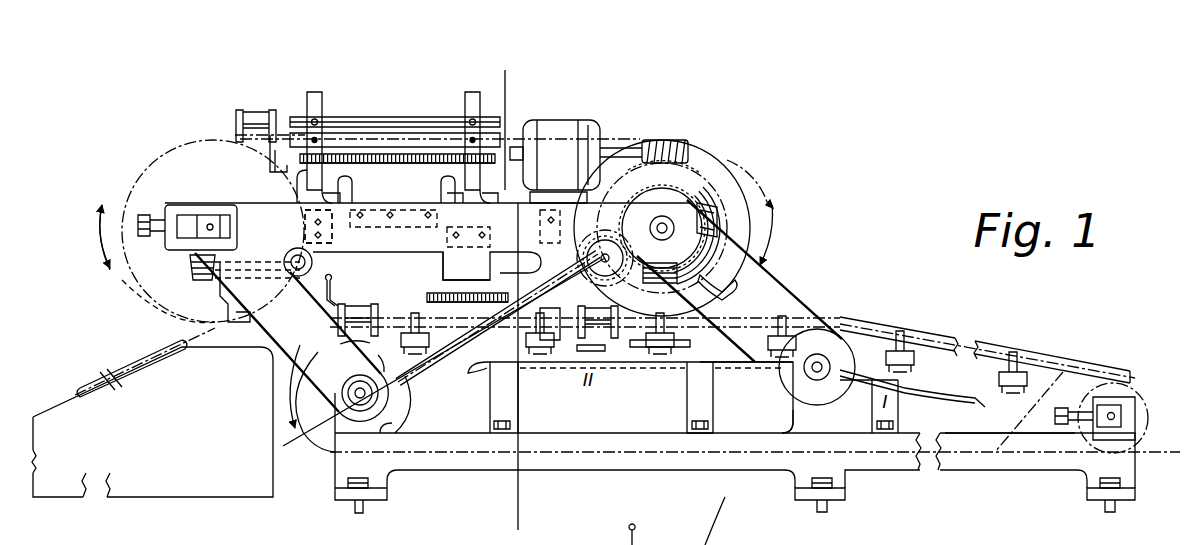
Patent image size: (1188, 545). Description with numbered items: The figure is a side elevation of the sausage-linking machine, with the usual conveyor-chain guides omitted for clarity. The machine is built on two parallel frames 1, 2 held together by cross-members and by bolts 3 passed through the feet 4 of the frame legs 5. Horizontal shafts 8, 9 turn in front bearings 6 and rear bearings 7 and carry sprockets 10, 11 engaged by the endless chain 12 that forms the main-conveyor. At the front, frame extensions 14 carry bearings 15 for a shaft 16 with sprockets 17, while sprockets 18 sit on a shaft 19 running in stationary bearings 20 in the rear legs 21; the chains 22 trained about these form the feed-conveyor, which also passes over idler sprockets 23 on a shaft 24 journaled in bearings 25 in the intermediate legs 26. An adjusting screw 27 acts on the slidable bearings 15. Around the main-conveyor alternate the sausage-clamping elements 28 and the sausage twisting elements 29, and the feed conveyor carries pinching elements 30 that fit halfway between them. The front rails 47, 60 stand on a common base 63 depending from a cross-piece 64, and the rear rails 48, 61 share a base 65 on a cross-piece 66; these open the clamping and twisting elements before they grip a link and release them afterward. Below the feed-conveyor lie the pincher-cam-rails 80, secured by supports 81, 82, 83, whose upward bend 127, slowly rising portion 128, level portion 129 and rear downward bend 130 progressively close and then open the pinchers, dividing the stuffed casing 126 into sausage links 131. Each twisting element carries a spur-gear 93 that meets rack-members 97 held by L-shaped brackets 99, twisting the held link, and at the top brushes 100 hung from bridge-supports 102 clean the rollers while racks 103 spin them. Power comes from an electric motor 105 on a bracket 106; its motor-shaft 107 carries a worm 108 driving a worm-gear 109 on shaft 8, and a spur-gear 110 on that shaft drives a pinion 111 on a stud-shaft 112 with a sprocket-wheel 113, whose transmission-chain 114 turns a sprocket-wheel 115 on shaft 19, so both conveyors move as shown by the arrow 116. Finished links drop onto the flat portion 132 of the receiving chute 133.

The frame 1 is at (486, 466).
The frame 2 is at (427, 243).
The bolts 3 is at (505, 70).
The feet 4 is at (378, 492).
The frame legs 5 is at (345, 491).
The front bearings 6 is at (694, 173).
The rear bearings 7 is at (204, 222).
The horizontal shaft 8 is at (667, 223).
The horizontal shaft 9 is at (214, 225).
The sprockets 10 is at (754, 190).
The sprockets 11 is at (130, 178).
The endless chain 12 is at (238, 133).
The frame extensions 14 is at (1004, 472).
The bearings 15 is at (1132, 417).
The shaft 16 is at (1114, 412).
The sprockets 17 is at (1126, 384).
The sprockets 18 is at (426, 402).
The shaft 19 is at (344, 405).
The stationary bearings 20 is at (360, 411).
The rear legs 21 is at (335, 465).
The chains 22 is at (1029, 412).
The idler sprockets 23 is at (790, 400).
The shaft 24 is at (822, 348).
The bearings 25 is at (817, 382).
The intermediate legs 26 is at (144, 215).
The adjusting screw 27 is at (1068, 420).
The sausage-clamping elements 28 is at (246, 325).
The sausage twisting elements 29 is at (270, 110).
The pinching elements 30 is at (417, 316).
The front rail 47 is at (781, 199).
The rear rail 48 is at (124, 284).
The front rail 60 is at (773, 217).
The rear rail 61 is at (190, 272).
The common base 63 is at (740, 186).
The cross-piece 64 is at (609, 230).
The common base 65 is at (313, 263).
The cross-piece 66 is at (333, 232).
The pincher-cam-rails 80 is at (756, 366).
The support 81 is at (900, 410).
The support 82 is at (713, 402).
The support 83 is at (516, 406).
The spur-gear 93 is at (270, 152).
The rack-member 97 is at (467, 288).
The L-shaped brackets 99 is at (448, 270).
The brushes 100 is at (356, 125).
The bridge-supports 102 is at (314, 93).
The rack 103 is at (386, 154).
The electric motor 105 is at (550, 116).
The bracket 106 is at (540, 210).
The motor-shaft 107 is at (623, 152).
The worm 108 is at (669, 140).
The worm-gear 109 is at (694, 165).
The spur-gear 110 is at (616, 246).
The pinion 111 is at (668, 284).
The stud-shaft 112 is at (575, 313).
The sprocket-wheel 113 is at (610, 276).
The transmission-chain 114 is at (384, 365).
The sprocket-wheel 115 is at (368, 347).
The arrow 116 is at (698, 348).
The stuffed casing 126 is at (1050, 362).
The upward bend 127 is at (847, 374).
The portion 128 is at (645, 348).
The level portion 129 is at (594, 356).
The rear downward bend 130 is at (478, 374).
The sausage links 131 is at (775, 281).
The flat portion 132 is at (262, 365).
The receiving chute 133 is at (152, 422).